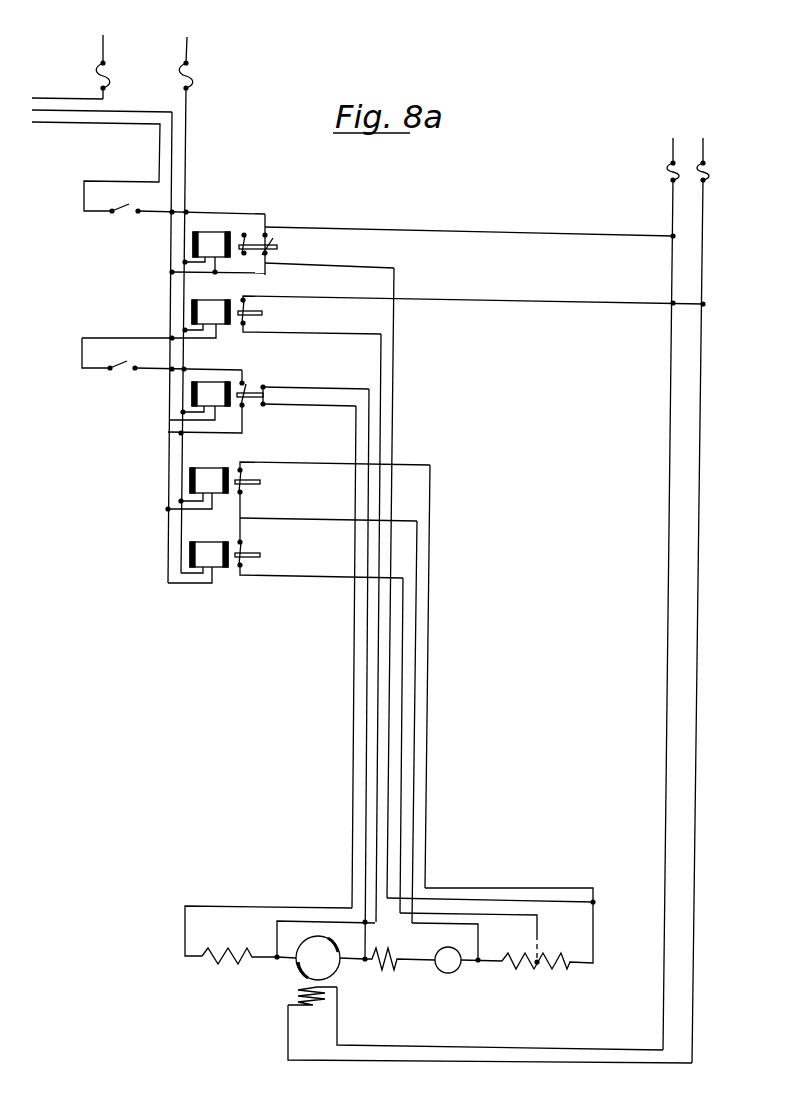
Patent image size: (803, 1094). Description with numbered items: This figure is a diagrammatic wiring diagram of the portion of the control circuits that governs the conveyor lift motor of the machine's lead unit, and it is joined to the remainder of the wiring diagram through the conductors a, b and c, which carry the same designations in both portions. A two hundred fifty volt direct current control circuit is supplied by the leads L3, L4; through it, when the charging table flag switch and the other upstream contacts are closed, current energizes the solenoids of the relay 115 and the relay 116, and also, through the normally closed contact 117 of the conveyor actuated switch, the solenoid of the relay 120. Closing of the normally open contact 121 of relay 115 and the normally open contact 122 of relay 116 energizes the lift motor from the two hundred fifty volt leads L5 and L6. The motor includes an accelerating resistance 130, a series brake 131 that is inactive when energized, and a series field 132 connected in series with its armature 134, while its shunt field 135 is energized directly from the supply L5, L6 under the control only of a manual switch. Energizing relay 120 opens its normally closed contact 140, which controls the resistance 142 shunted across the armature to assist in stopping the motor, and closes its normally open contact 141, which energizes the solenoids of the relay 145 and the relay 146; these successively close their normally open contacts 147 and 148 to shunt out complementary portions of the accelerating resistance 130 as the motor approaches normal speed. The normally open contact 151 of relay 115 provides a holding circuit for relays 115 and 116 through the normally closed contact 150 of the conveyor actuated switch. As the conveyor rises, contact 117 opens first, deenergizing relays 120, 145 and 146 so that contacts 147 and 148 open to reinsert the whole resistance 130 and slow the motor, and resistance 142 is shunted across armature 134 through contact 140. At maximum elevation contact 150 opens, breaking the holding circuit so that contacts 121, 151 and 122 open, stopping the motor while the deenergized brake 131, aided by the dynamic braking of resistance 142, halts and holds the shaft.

The lead L3 is at (103, 43).
The lead L4 is at (187, 50).
The lead L5 is at (672, 149).
The lead L6 is at (704, 149).
The conductor a is at (43, 97).
The conductor b is at (72, 110).
The conductor c is at (93, 121).
The normally closed contact 150 is at (127, 213).
The normally open contact 121 is at (247, 233).
The normally open contact 151 is at (276, 241).
The relay 115 is at (217, 253).
The relay 116 is at (156, 320).
The normally open contact 122 is at (256, 312).
The normally closed contact 117 is at (121, 368).
The relay 120 is at (199, 401).
The normally open contact 141 is at (249, 386).
The normally closed contact 140 is at (260, 401).
The relay 145 is at (196, 490).
The normally open contact 147 is at (246, 480).
The relay 146 is at (198, 562).
The normally open contact 148 is at (246, 551).
The resistance 142 is at (227, 950).
The armature 134 is at (326, 949).
The series field 132 is at (388, 971).
The series brake 131 is at (456, 971).
The accelerating resistance 130 is at (545, 966).
The shunt field 135 is at (298, 996).